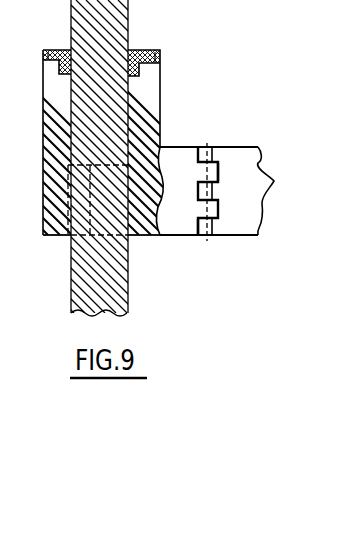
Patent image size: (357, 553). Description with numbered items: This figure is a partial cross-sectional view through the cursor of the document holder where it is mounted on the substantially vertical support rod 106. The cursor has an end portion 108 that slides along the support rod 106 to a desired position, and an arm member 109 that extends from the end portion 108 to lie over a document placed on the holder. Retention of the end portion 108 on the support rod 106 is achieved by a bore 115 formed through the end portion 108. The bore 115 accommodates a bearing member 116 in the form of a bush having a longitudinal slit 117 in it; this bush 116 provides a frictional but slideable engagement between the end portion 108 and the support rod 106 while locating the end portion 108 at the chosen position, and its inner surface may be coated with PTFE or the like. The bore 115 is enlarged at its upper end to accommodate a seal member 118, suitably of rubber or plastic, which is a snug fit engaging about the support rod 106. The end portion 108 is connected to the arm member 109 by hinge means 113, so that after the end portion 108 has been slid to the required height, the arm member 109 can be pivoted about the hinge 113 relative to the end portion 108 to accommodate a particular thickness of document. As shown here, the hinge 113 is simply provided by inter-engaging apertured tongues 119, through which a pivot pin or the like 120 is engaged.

The support rod 106 is at (117, 282).
The end portion 108 is at (161, 103).
The arm member 109 is at (237, 150).
The hinge means 113 is at (202, 142).
The bore 115 is at (160, 84).
The bearing member 116 is at (143, 228).
The longitudinal slit 117 is at (72, 238).
The seal member 118 is at (145, 50).
The apertured tongues 119 is at (215, 175).
The pivot pin 120 is at (206, 236).